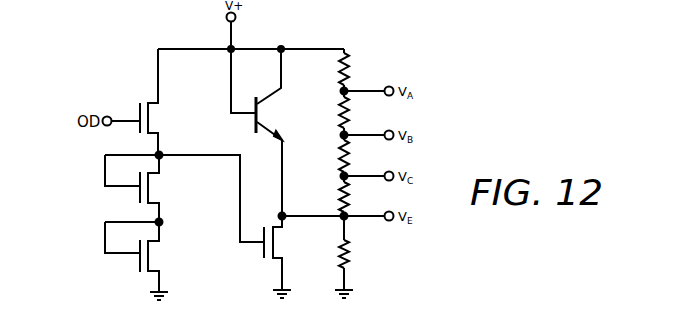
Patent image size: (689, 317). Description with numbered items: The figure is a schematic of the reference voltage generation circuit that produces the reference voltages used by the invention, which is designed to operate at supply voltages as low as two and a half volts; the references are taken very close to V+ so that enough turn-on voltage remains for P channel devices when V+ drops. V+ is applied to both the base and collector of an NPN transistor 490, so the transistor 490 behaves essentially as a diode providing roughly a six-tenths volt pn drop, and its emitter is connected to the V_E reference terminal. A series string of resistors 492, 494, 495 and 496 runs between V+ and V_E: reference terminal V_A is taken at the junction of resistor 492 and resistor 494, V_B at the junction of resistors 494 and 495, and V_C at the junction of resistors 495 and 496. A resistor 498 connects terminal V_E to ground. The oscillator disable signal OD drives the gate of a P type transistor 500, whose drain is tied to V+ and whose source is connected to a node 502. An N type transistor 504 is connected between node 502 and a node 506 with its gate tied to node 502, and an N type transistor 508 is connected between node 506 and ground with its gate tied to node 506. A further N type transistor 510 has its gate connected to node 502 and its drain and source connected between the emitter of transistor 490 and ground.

The NPN transistor 490 is at (272, 117).
The resistor 492 is at (350, 73).
The resistor 494 is at (355, 118).
The resistor 495 is at (352, 162).
The resistor 496 is at (352, 200).
The resistor 498 is at (356, 245).
The P type transistor 500 is at (158, 118).
The node 502 is at (200, 154).
The N type transistor 504 is at (168, 193).
The node 506 is at (164, 223).
The N type transistor 508 is at (165, 262).
The N type transistor 510 is at (288, 250).